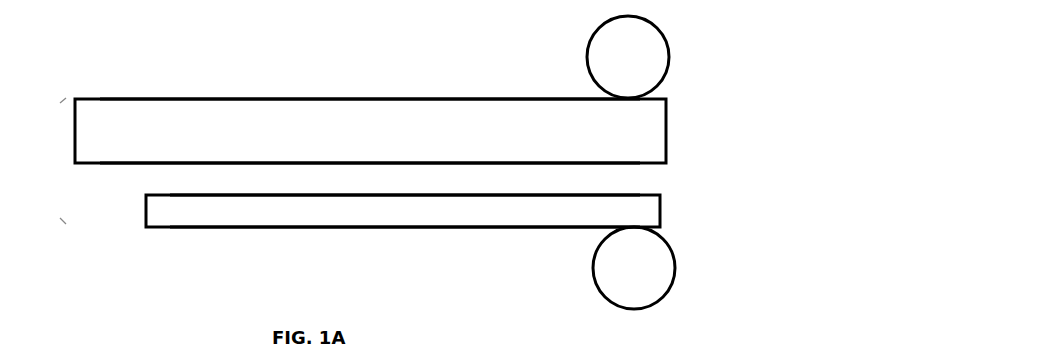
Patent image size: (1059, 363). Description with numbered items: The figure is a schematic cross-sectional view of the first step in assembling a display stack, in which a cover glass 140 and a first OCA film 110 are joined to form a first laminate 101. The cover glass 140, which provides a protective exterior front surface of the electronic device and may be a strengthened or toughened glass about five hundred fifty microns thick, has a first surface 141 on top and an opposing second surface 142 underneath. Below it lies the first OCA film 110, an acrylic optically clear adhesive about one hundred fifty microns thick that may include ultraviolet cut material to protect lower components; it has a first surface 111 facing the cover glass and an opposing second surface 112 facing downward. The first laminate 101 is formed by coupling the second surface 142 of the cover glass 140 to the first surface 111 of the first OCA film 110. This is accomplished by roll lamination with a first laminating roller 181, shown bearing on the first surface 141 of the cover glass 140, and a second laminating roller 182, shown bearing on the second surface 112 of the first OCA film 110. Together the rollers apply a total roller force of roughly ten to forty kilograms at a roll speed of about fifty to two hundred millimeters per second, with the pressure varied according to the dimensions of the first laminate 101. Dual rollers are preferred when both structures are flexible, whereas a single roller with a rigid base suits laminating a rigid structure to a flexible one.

The first laminate 101 is at (61, 156).
The first OCA film 110 is at (660, 210).
The first surface 111 is at (465, 195).
The second surface 112 is at (465, 227).
The cover glass 140 is at (666, 133).
The first surface 141 is at (212, 99).
The second surface 142 is at (212, 163).
The first laminating roller 181 is at (668, 60).
The second laminating roller 182 is at (675, 272).